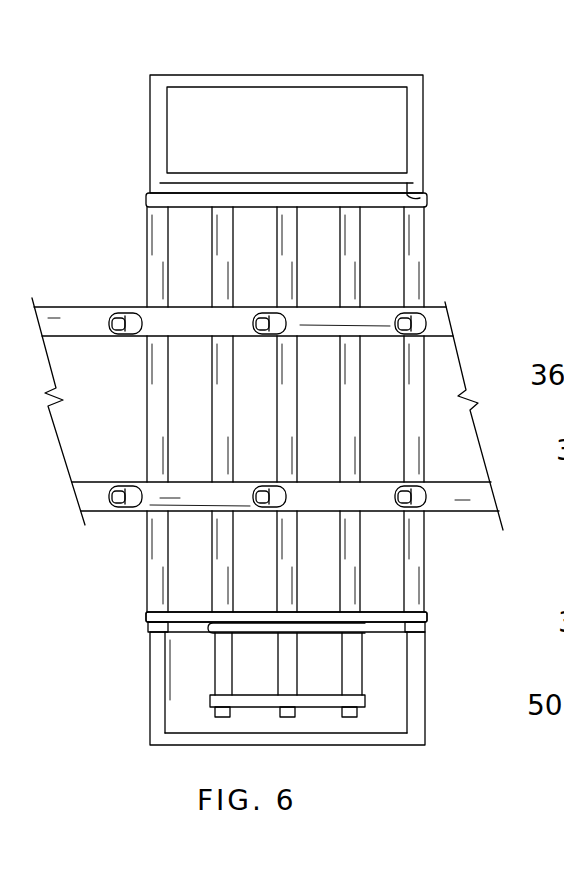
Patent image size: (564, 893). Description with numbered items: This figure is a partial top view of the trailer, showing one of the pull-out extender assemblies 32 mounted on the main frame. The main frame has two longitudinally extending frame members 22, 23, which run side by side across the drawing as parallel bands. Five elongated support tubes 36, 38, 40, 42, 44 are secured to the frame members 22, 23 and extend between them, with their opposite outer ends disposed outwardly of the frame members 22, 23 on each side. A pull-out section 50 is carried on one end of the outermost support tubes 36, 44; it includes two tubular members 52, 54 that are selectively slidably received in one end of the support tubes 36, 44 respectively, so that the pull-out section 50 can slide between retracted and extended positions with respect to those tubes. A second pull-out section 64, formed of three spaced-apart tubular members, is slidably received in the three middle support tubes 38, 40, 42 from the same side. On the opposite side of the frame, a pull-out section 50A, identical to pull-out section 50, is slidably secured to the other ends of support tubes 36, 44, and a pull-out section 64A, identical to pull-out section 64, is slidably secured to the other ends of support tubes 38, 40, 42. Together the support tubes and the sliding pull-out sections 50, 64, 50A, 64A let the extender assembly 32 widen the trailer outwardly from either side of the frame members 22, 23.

The frame member 22 is at (101, 498).
The frame member 23 is at (83, 324).
The pull-out extender assembly 32 is at (133, 607).
The support tube 36 is at (147, 377).
The support tube 38 is at (213, 428).
The support tube 40 is at (263, 410).
The support tube 42 is at (327, 410).
The support tube 44 is at (405, 423).
The pull-out section 50 is at (425, 705).
The pull-out section 50A is at (387, 175).
The tubular member 52 is at (150, 687).
The tubular member 54 is at (422, 667).
The pull-out section 64 is at (362, 633).
The pull-out section 64A is at (425, 190).